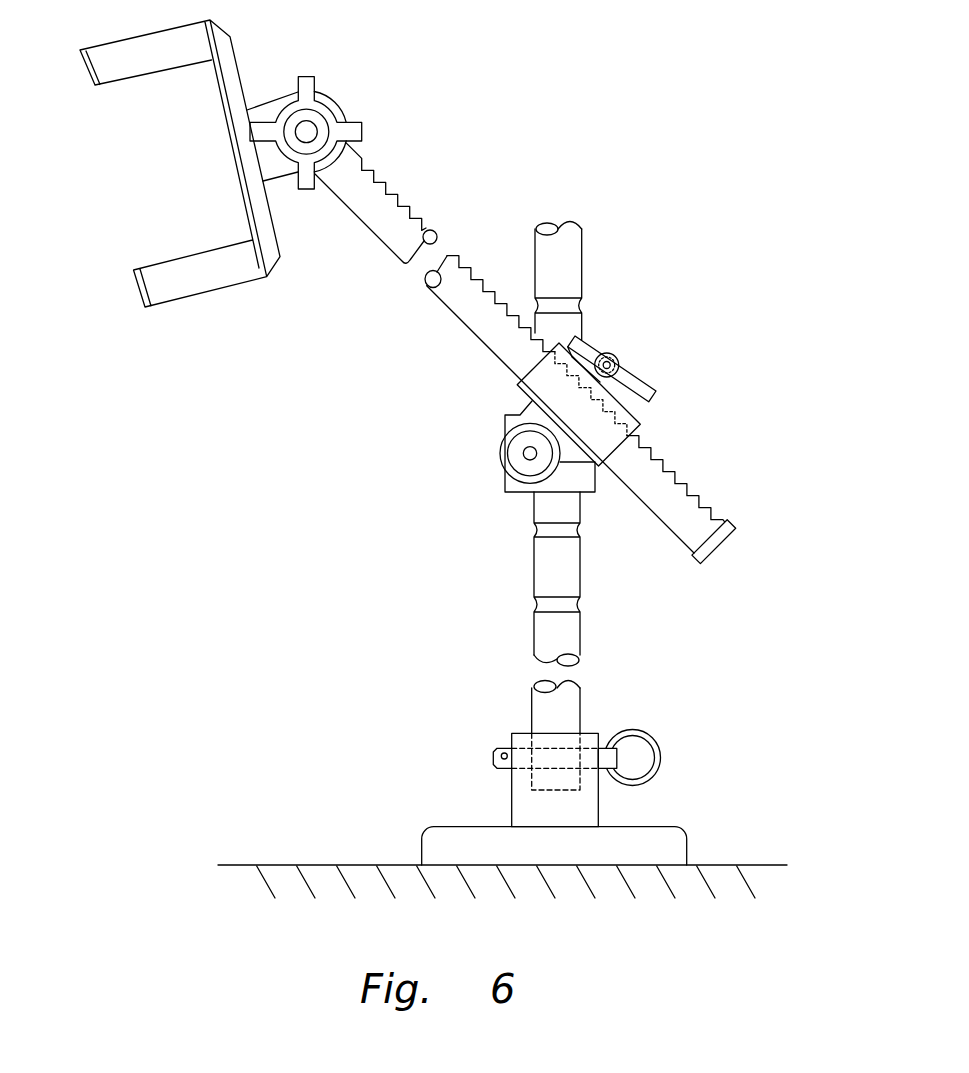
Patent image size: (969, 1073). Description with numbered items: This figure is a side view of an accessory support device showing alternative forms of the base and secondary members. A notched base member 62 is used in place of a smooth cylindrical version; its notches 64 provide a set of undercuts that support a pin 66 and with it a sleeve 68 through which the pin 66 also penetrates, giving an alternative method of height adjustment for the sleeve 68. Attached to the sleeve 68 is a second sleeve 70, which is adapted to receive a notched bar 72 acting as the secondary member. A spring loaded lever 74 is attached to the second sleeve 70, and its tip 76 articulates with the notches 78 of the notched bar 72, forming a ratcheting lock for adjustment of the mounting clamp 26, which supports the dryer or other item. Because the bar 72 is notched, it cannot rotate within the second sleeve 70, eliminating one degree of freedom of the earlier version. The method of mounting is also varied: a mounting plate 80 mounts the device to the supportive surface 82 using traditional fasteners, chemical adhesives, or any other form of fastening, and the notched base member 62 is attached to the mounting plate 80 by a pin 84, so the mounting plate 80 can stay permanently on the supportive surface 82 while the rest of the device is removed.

The mounting clamp 26 is at (225, 330).
The notched base member 62 is at (582, 708).
The notches 64 is at (533, 605).
The pin 66 is at (524, 451).
The sleeve 68 is at (505, 483).
The second sleeve 70 is at (620, 453).
The notched bar 72 is at (718, 560).
The spring loaded lever 74 is at (647, 380).
The tip 76 is at (557, 350).
The notches 78 is at (453, 260).
The mounting plate 80 is at (688, 843).
The supportive surface 82 is at (307, 865).
The pin 84 is at (653, 735).